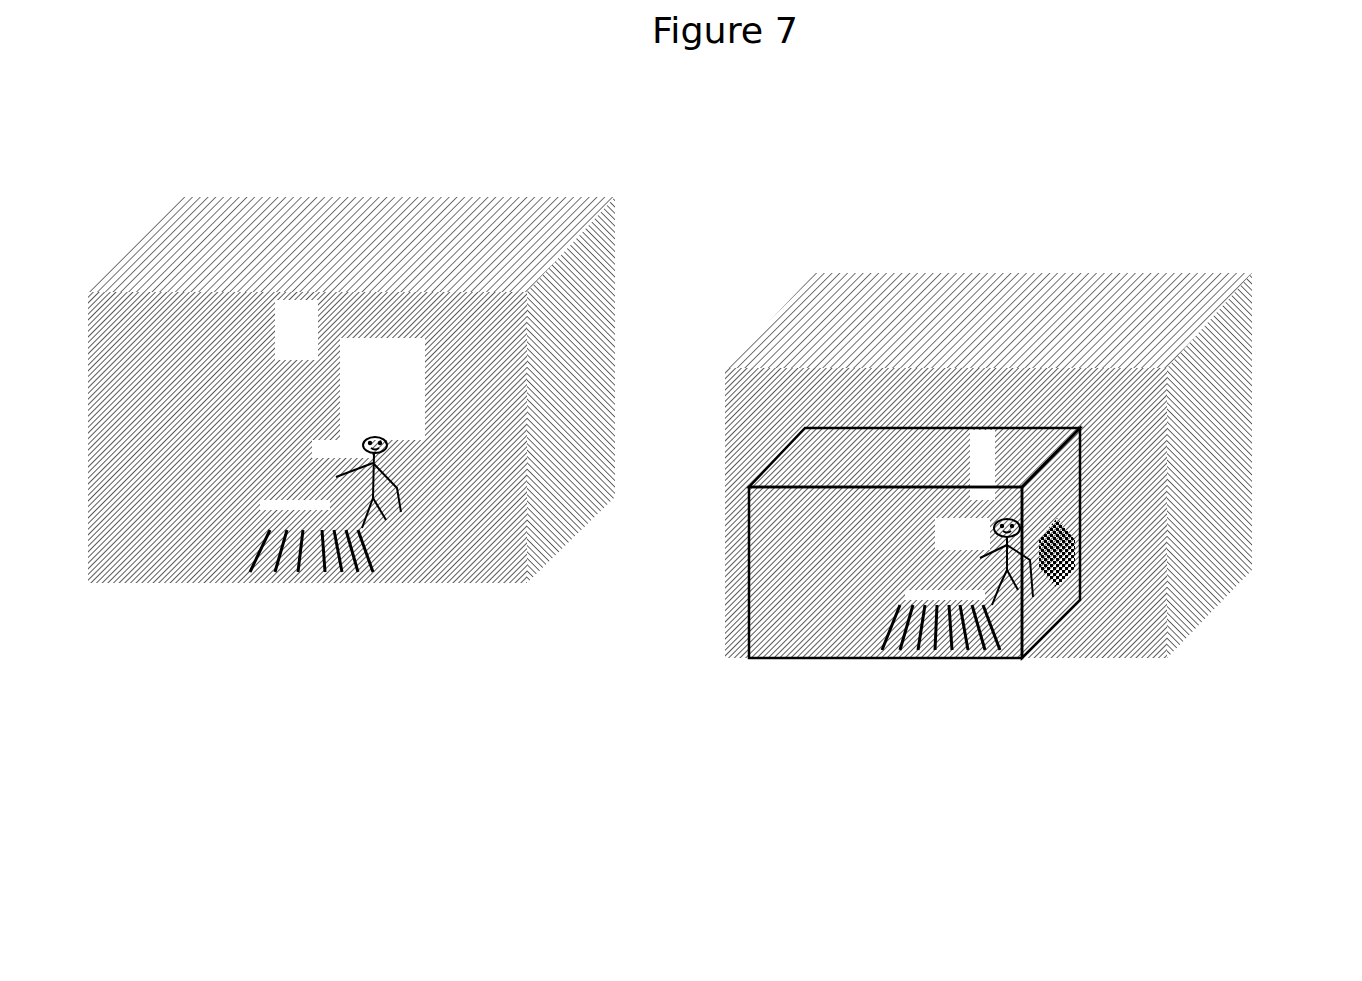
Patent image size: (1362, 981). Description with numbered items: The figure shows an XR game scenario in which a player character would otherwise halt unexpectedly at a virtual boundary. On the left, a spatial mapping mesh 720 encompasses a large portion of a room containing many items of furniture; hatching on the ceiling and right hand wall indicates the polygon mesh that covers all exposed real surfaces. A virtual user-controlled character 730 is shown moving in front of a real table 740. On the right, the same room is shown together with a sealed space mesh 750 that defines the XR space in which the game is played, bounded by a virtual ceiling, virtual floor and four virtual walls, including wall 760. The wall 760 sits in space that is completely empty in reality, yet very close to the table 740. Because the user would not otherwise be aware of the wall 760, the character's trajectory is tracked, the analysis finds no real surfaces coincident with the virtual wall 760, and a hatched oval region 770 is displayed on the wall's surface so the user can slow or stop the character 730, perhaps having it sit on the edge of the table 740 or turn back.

The spatial mapping mesh 720 is at (188, 205).
The virtual user-controlled character 730 is at (343, 468).
The real table 740 is at (432, 460).
The sealed space mesh 750 is at (805, 428).
The wall 760 is at (1072, 487).
The hatched oval region 770 is at (1092, 572).